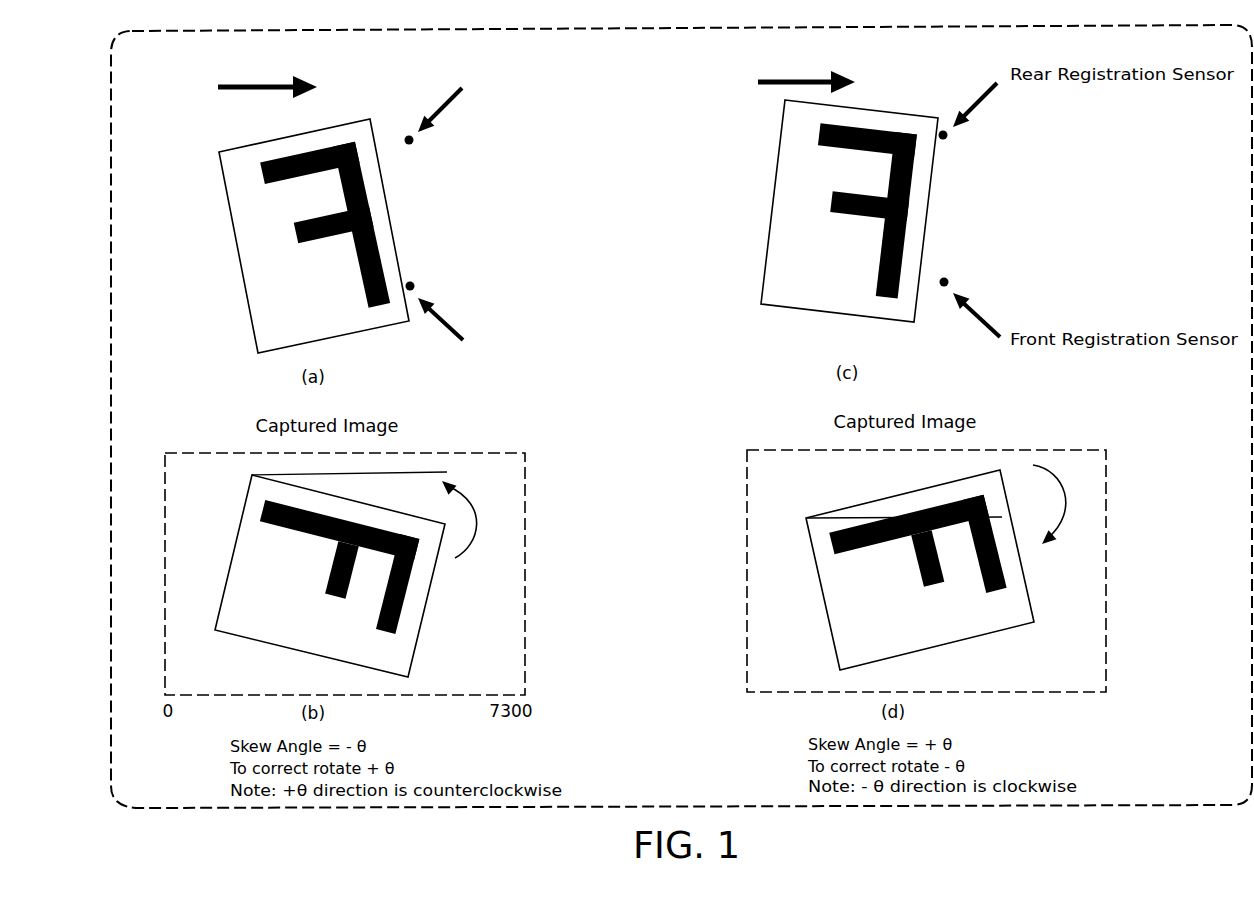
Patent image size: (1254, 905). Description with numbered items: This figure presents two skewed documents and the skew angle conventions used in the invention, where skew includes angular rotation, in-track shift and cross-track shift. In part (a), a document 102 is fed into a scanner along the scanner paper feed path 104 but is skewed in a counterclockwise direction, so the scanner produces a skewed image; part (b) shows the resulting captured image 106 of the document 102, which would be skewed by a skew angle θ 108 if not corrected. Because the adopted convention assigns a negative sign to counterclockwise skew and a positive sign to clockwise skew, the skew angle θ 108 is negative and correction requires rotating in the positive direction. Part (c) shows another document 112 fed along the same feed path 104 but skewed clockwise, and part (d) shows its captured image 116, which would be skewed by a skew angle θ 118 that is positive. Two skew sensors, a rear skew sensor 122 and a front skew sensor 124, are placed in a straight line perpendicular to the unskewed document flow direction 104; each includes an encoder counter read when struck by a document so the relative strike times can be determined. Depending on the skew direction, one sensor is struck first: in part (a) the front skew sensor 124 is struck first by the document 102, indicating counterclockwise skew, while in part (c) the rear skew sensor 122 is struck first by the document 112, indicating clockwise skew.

The document 102 is at (249, 307).
The scanner paper feed path 104 is at (263, 84).
The captured image 106 is at (427, 607).
The skew angle θ 108 is at (375, 487).
The document 112 is at (770, 228).
The captured image 116 is at (960, 640).
The skew angle θ 118 is at (895, 498).
The rear skew sensor 122 is at (413, 143).
The front skew sensor 124 is at (413, 283).